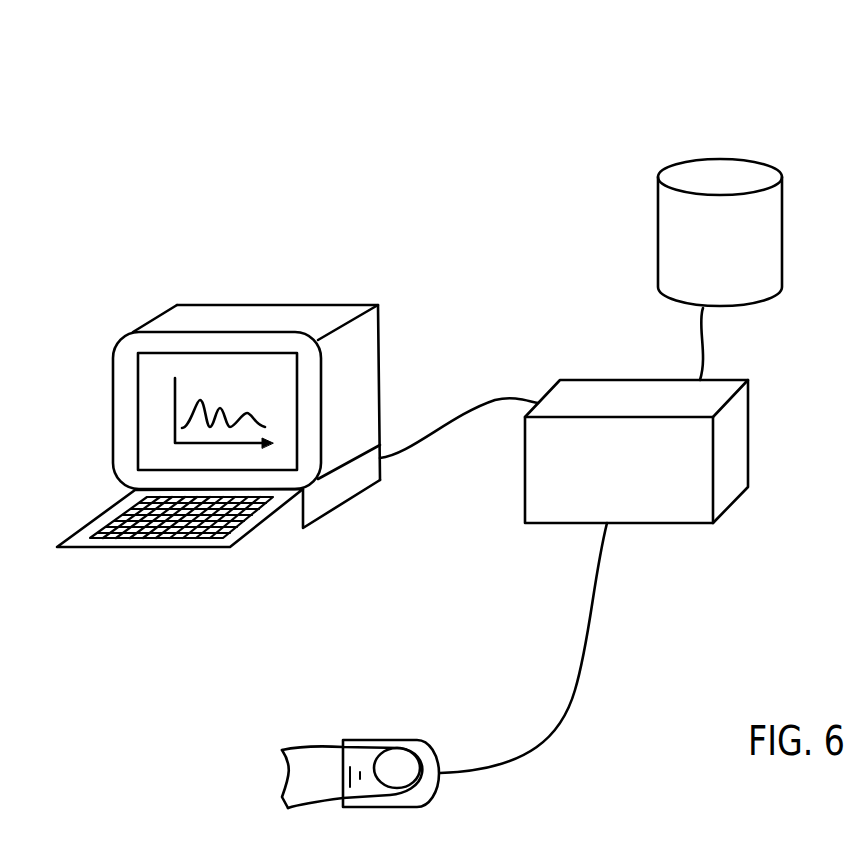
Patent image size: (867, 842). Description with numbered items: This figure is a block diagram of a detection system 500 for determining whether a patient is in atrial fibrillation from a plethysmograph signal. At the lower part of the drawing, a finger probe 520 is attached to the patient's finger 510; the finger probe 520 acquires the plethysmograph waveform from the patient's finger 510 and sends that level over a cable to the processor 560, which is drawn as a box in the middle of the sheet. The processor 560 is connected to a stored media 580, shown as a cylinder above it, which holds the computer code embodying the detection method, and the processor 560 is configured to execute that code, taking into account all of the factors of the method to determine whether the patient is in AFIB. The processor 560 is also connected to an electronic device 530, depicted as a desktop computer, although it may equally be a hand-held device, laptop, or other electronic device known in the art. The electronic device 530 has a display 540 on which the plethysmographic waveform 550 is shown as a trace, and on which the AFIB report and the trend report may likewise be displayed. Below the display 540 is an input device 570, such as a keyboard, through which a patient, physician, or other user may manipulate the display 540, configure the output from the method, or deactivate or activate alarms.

The detection system 500 is at (466, 126).
The patient's finger 510 is at (303, 740).
The finger probe 520 is at (413, 738).
The electronic device 530 is at (281, 305).
The display 540 is at (298, 413).
The plethysmographic waveform 550 is at (197, 367).
The processor 560 is at (738, 497).
The input device 570 is at (107, 525).
The stored media 580 is at (728, 157).